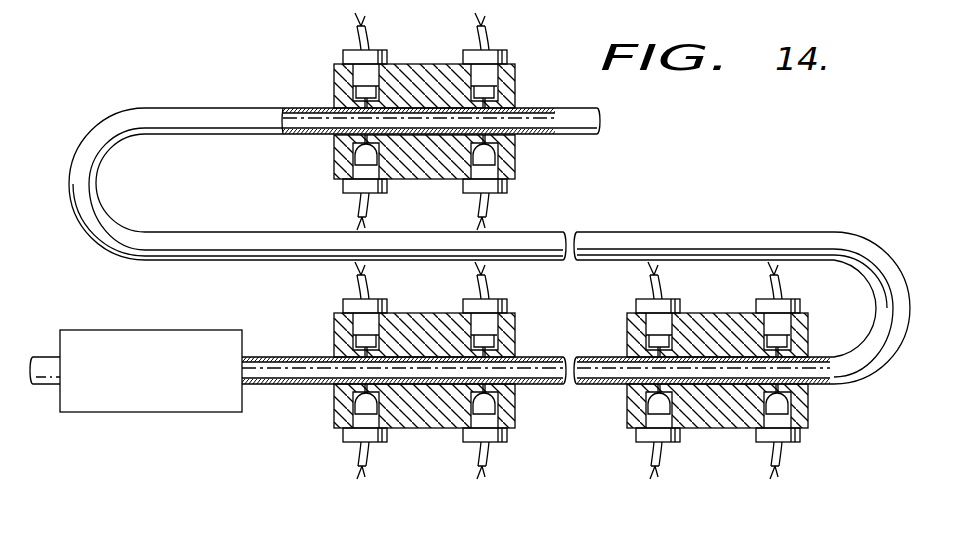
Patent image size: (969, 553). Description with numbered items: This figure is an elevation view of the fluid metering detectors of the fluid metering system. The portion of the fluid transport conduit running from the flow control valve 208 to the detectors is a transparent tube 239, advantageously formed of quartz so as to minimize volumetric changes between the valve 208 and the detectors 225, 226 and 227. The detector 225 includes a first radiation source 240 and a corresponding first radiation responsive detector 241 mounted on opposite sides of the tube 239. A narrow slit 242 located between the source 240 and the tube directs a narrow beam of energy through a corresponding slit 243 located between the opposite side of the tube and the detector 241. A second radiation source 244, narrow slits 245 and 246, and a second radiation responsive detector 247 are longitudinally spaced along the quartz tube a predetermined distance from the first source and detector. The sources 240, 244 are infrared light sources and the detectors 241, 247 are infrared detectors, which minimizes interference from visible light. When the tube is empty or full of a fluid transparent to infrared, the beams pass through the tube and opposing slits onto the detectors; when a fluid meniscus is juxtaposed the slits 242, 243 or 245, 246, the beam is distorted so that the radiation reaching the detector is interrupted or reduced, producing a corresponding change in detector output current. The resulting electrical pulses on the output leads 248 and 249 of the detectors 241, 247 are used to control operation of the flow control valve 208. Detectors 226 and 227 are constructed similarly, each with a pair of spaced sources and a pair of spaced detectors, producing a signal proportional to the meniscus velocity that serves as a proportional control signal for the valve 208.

The flow control valve 208 is at (102, 331).
The detector 225 is at (407, 374).
The detector 226 is at (817, 413).
The detector 227 is at (325, 62).
The transparent tube 239 is at (298, 357).
The first radiation source 240 is at (386, 303).
The first radiation responsive detector 241 is at (357, 435).
The narrow slit 242 is at (360, 347).
The slit 243 is at (352, 393).
The second radiation source 244 is at (507, 304).
The narrow slit 245 is at (487, 347).
The narrow slit 246 is at (493, 392).
The second radiation responsive detector 247 is at (497, 433).
The output lead 248 is at (349, 450).
The output lead 249 is at (500, 452).